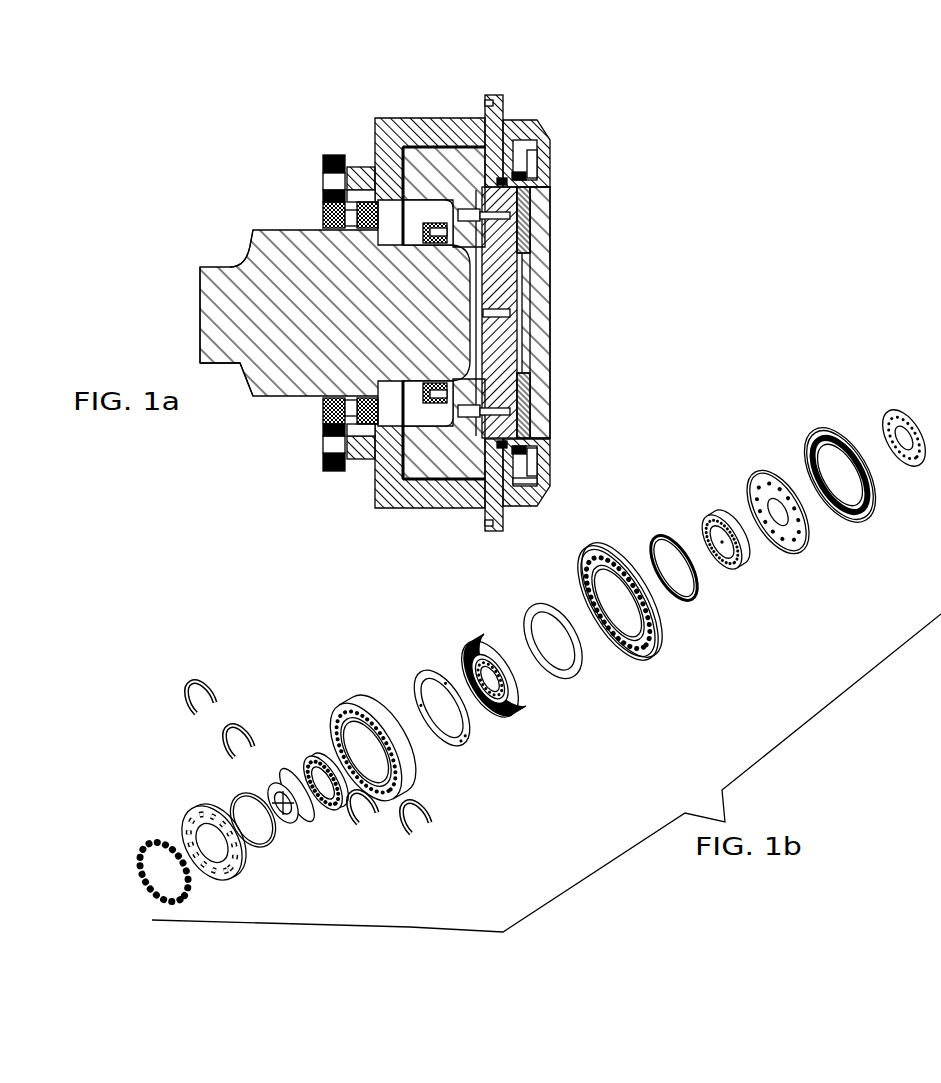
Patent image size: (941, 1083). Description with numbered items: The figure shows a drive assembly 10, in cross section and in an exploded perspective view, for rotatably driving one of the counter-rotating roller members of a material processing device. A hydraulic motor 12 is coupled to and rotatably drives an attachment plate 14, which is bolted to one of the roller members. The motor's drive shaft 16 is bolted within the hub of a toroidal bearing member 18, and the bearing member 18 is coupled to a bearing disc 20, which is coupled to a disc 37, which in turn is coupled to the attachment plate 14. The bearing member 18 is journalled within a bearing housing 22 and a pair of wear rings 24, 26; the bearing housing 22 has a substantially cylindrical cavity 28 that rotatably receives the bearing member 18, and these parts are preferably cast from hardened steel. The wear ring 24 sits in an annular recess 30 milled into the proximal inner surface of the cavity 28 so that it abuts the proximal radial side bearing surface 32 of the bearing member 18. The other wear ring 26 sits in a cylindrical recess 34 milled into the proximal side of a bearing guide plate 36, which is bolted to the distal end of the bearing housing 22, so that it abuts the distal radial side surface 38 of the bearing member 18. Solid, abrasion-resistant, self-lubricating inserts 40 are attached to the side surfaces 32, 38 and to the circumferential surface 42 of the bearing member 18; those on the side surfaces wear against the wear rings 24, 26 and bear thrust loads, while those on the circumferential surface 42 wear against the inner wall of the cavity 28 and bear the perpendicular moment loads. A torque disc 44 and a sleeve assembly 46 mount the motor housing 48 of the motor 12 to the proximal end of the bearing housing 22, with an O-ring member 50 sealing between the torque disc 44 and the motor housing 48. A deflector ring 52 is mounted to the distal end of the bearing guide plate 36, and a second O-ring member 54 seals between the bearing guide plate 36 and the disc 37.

In FIG. 1A, the drive assembly 10 is at (411, 309).
In FIG. 1A, the hydraulic motor 12 is at (201, 364).
In FIG. 1B, the hydraulic motor 12 is at (244, 735).
In FIG. 1A, the attachment plate 14 is at (602, 312).
In FIG. 1B, the attachment plate 14 is at (846, 423).
In FIG. 1A, the drive shaft 16 is at (335, 313).
In FIG. 1B, the drive shaft 16 is at (276, 719).
In FIG. 1A, the toroidal bearing member 18 is at (327, 370).
In FIG. 1B, the toroidal bearing member 18 is at (429, 663).
In FIG. 1A, the bearing disc 20 is at (558, 312).
In FIG. 1B, the bearing disc 20 is at (709, 596).
In FIG. 1A, the bearing housing 22 is at (343, 354).
In FIG. 1B, the bearing housing 22 is at (324, 707).
In FIG. 1A, the wear ring 24 is at (296, 361).
In FIG. 1B, the wear ring 24 is at (435, 774).
In FIG. 1A, the wear ring 26 is at (580, 497).
In FIG. 1B, the wear ring 26 is at (505, 628).
In FIG. 1A, the cylindrical cavity 28 is at (573, 312).
In FIG. 1A, the annular recess 30 is at (387, 306).
In FIG. 1B, the proximal radial side bearing surface 32 is at (476, 775).
In FIG. 1A, the cylindrical recess 34 is at (575, 286).
In FIG. 1B, the cylindrical recess 34 is at (601, 653).
In FIG. 1A, the bearing guide plate 36 is at (558, 285).
In FIG. 1B, the bearing guide plate 36 is at (617, 670).
In FIG. 1A, the disc 37 is at (615, 312).
In FIG. 1B, the disc 37 is at (737, 504).
In FIG. 1B, the distal radial side surface 38 is at (439, 649).
In FIG. 1A, the friction members or inserts 40 is at (441, 333).
In FIG. 1A, the circumferential surface 42 is at (535, 313).
In FIG. 1A, the torque disc 44 is at (261, 419).
In FIG. 1B, the torque disc 44 is at (169, 835).
In FIG. 1A, the sleeve assembly 46 is at (273, 323).
In FIG. 1B, the sleeve assembly 46 is at (131, 860).
In FIG. 1A, the motor housing 48 is at (187, 245).
In FIG. 1B, the motor housing 48 is at (295, 828).
In FIG. 1A, the O-ring member 50 is at (270, 313).
In FIG. 1B, the O-ring member 50 is at (198, 808).
In FIG. 1A, the deflector ring 52 is at (605, 282).
In FIG. 1B, the deflector ring 52 is at (796, 473).
In FIG. 1A, the O-ring member 54 is at (592, 291).
In FIG. 1B, the O-ring member 54 is at (629, 568).